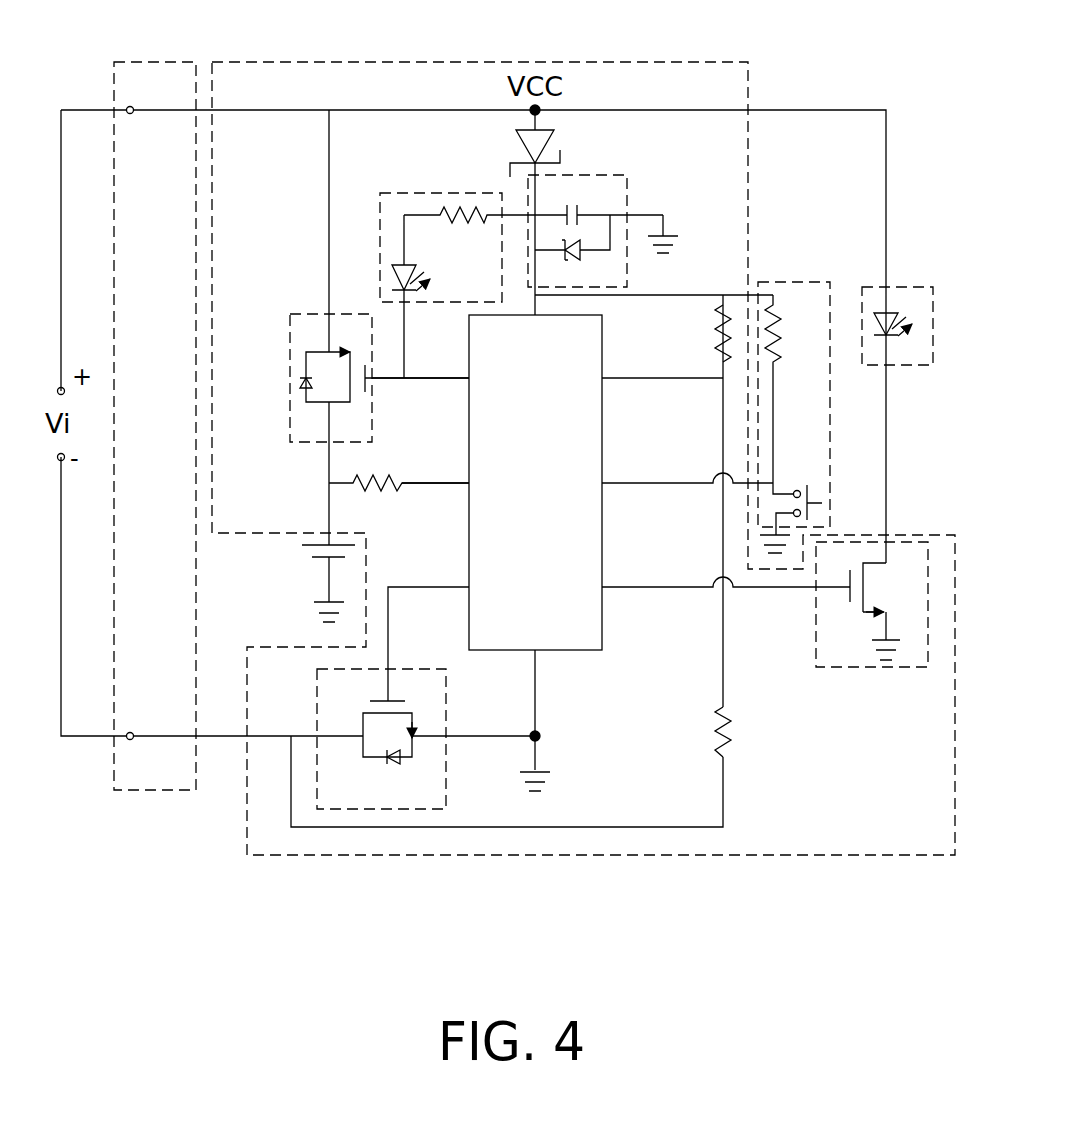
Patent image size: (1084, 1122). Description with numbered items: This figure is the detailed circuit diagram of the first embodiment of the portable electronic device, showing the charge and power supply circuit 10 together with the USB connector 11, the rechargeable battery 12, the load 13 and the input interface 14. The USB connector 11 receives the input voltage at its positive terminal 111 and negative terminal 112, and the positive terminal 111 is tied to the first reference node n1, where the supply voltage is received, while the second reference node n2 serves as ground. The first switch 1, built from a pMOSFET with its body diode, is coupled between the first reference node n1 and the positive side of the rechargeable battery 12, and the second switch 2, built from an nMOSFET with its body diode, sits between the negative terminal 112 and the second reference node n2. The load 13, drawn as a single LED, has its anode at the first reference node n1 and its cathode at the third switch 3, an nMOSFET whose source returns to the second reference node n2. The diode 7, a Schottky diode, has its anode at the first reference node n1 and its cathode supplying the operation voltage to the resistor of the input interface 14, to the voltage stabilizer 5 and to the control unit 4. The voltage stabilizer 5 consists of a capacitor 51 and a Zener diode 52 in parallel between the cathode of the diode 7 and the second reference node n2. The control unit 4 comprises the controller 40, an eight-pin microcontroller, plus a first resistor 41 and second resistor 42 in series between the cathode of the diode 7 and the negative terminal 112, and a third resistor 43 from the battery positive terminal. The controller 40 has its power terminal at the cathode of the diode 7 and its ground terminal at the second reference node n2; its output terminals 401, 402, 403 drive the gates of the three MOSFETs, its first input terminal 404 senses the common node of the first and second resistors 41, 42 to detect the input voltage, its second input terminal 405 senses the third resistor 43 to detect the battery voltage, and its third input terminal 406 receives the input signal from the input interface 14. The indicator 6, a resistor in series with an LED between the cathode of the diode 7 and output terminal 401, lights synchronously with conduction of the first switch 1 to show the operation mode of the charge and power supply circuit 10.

The charge and power supply circuit 10 is at (722, 61).
The universal serial bus (USB) connector 11 is at (164, 62).
The positive terminal 111 is at (144, 113).
The negative terminal 112 is at (145, 733).
The first switch 1 is at (300, 312).
The rechargeable battery 12 is at (316, 553).
The load 13 is at (905, 287).
The input interface 14 is at (800, 282).
The second switch 2 is at (447, 701).
The third switch 3 is at (863, 668).
The control unit 4 is at (606, 633).
The controller 40 is at (603, 408).
The output terminal 401 is at (452, 376).
The output terminal 402 is at (452, 585).
The output terminal 403 is at (616, 585).
The first input terminal 404 is at (616, 376).
The second input terminal 405 is at (452, 481).
The third input terminal 406 is at (616, 481).
The first resistor 41 is at (717, 329).
The second resistor 42 is at (729, 726).
The third resistor 43 is at (372, 491).
The voltage stabilizer 5 is at (602, 175).
The capacitor 51 is at (576, 204).
The Zener diode 52 is at (577, 262).
The indicator 6 is at (427, 193).
The diode 7 is at (521, 152).
The first reference node n1 is at (540, 108).
The second reference node n2 is at (540, 733).